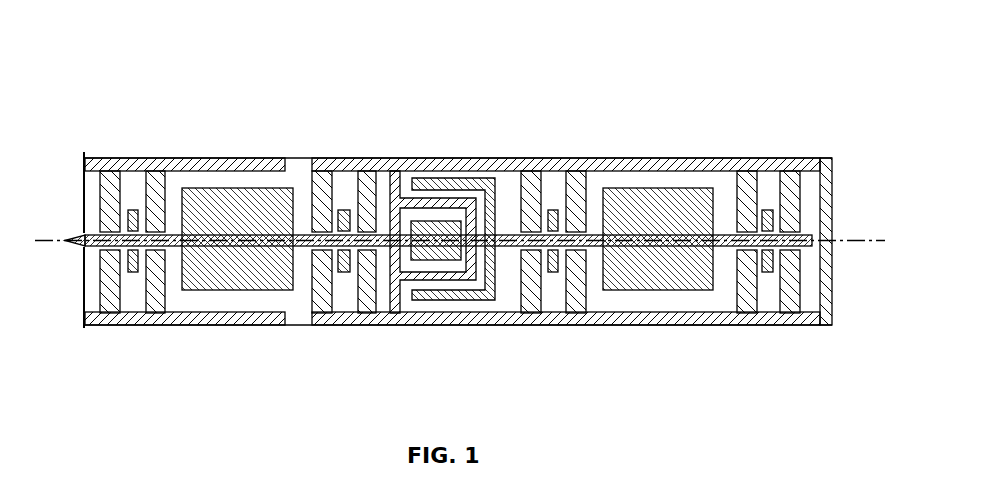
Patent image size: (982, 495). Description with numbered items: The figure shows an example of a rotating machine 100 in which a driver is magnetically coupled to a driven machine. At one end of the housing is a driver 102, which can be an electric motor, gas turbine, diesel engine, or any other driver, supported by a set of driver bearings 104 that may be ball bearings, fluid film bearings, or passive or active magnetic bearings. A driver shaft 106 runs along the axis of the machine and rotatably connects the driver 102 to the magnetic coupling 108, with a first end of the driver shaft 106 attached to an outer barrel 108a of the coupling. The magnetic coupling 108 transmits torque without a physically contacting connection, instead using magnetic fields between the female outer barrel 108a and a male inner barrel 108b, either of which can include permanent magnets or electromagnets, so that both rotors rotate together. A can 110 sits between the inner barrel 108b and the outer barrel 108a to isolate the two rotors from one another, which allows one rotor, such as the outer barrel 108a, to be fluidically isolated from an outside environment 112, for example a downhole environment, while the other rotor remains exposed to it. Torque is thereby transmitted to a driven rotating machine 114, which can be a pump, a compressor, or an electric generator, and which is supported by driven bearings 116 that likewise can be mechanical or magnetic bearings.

The rotating machine 100 is at (163, 56).
The driver 102 is at (670, 240).
The driver bearings 104 is at (558, 146).
The driver shaft 106 is at (590, 238).
The magnetic coupling 108 is at (469, 263).
The outer barrel 108a is at (485, 305).
The inner barrel 108b is at (432, 247).
The can 110 is at (432, 198).
The outside environment 112 is at (193, 363).
The driven rotating machine 114 is at (232, 240).
The driven bearings 116 is at (155, 146).